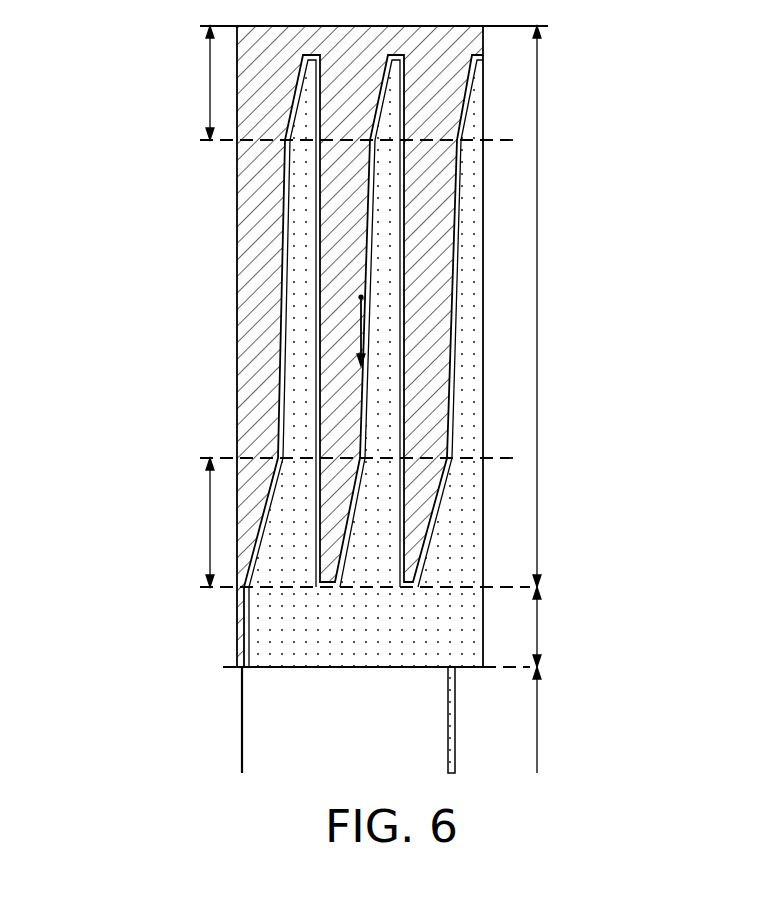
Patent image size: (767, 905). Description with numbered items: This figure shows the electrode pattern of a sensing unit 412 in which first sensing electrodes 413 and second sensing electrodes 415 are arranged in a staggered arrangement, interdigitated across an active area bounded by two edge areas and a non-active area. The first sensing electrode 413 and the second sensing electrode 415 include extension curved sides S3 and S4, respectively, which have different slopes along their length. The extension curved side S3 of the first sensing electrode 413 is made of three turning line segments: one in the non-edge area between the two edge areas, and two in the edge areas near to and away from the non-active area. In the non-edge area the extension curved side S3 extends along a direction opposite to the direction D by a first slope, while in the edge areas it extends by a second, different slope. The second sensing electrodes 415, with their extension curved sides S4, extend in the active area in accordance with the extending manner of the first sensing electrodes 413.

The sensing unit 412 is at (136, 235).
The first sensing electrode 413 is at (483, 196).
The second sensing electrode 415 is at (237, 187).
The extension curved side S3 is at (450, 164).
The extension curved side S4 is at (450, 232).
The direction D is at (363, 346).